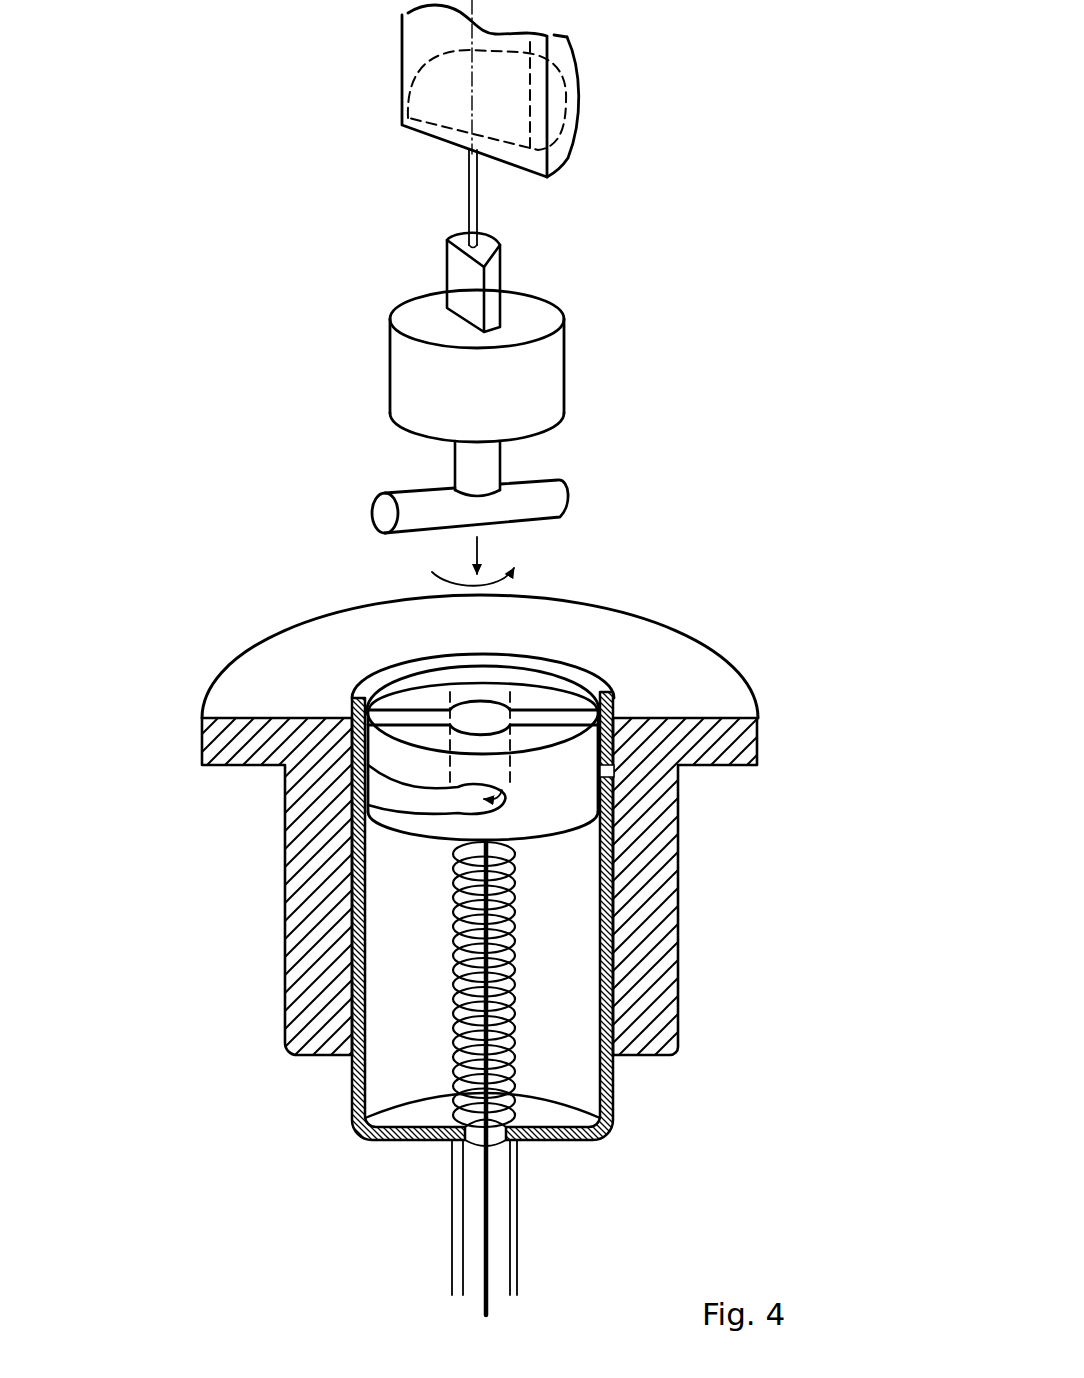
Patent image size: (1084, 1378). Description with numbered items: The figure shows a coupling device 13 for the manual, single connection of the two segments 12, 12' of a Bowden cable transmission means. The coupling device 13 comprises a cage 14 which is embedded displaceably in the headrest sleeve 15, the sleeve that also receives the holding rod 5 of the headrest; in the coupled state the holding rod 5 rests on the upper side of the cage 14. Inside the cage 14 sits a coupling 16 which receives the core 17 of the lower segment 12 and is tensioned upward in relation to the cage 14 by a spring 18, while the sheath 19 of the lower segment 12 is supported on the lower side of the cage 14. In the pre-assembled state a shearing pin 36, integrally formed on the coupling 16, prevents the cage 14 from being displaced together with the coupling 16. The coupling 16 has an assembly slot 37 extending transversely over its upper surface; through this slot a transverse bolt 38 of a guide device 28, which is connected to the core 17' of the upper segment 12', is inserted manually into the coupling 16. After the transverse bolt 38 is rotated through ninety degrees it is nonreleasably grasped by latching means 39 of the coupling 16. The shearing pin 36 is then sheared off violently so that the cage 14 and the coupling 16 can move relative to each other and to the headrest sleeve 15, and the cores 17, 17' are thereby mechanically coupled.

The holding rod 5 is at (568, 146).
The core 17' is at (555, 199).
The segment 12' is at (364, 251).
The guide device 28 is at (532, 383).
The transverse bolt 38 is at (540, 503).
The coupling device 13 is at (641, 555).
The assembly slot 37 is at (560, 717).
The headrest sleeve 15 is at (727, 743).
The shearing pin 36 is at (610, 777).
The coupling 16 is at (553, 812).
The latching means 39 is at (430, 822).
The spring 18 is at (455, 1043).
The cage 14 is at (607, 1085).
The segment 12 is at (362, 1229).
The sheath 19 is at (515, 1183).
The core 17 is at (554, 1078).